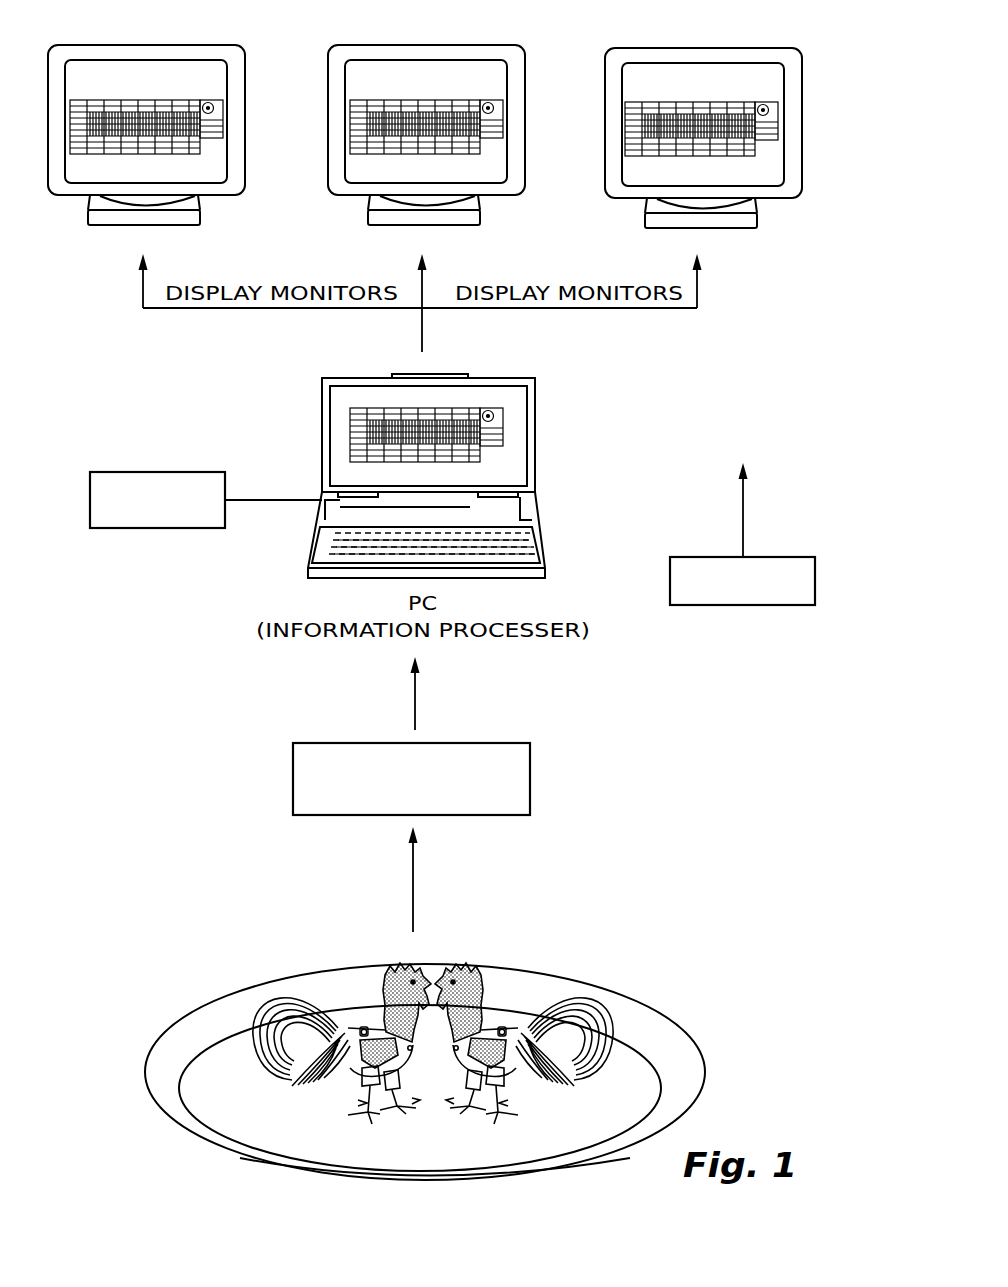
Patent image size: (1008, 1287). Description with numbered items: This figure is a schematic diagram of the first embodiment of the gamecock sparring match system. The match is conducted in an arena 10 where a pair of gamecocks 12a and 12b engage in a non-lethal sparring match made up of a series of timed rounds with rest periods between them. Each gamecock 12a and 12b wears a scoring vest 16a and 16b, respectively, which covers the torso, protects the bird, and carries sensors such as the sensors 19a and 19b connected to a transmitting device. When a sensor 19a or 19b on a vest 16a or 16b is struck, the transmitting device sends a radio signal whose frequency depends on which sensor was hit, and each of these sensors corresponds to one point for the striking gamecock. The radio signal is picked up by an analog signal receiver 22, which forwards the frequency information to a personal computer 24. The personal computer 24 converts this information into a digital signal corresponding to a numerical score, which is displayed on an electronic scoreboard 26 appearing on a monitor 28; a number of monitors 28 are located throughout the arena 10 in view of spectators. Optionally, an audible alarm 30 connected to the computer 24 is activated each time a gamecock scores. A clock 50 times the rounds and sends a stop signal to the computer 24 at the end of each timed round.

The arena 10 is at (634, 983).
The gamecock 12a is at (385, 998).
The gamecock 12b is at (481, 998).
The vest 16a is at (361, 1030).
The vest 16b is at (505, 1030).
The sensor 19a is at (365, 1028).
The sensor 19b is at (501, 1028).
The analog signal receiver 22 is at (485, 743).
The personal computer 24 is at (548, 481).
The electronic scoreboard 26 is at (176, 80).
The monitor 28 is at (128, 52).
The audible alarm 30 is at (173, 472).
The clock 50 is at (769, 557).